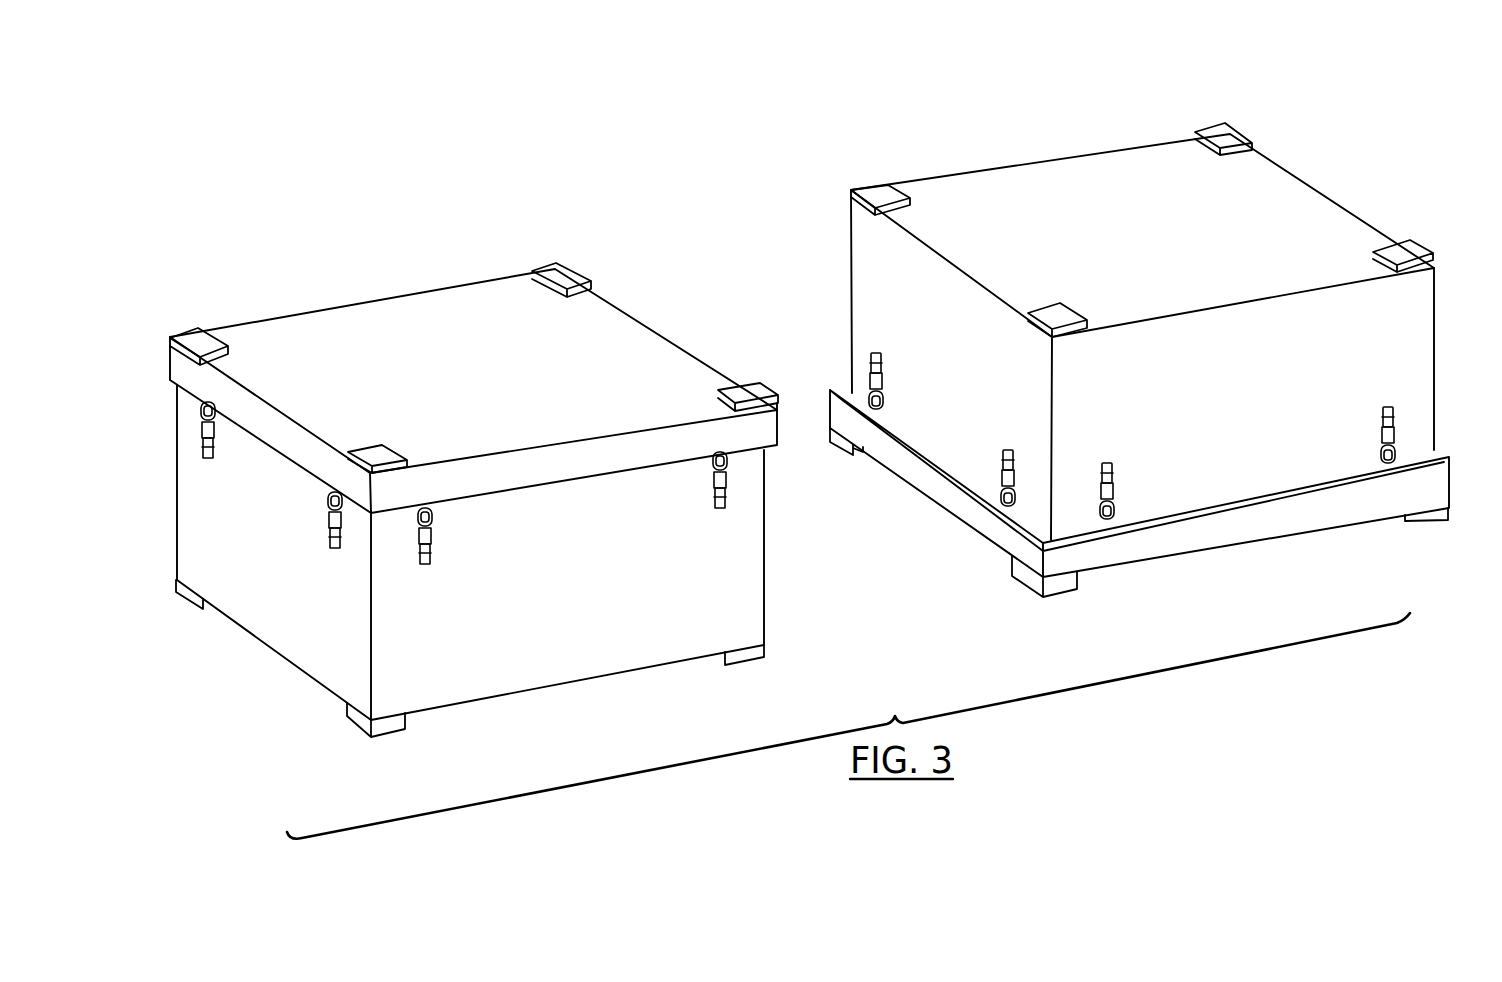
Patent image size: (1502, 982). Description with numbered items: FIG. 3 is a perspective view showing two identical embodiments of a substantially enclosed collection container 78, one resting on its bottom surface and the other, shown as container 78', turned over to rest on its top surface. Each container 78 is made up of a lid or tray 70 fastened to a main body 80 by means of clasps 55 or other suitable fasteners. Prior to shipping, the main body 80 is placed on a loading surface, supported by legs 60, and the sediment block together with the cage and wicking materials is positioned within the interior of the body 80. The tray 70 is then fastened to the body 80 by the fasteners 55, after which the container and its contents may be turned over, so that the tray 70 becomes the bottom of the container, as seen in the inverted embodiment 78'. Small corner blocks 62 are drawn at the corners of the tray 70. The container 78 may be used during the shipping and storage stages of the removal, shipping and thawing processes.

The clasps 55 is at (434, 520).
The legs 60 is at (393, 732).
The lid corner block 62 is at (575, 273).
The lid or tray 70 is at (475, 385).
The container 78 is at (503, 522).
The inverted container 78' is at (1163, 372).
The main body 80 is at (601, 575).